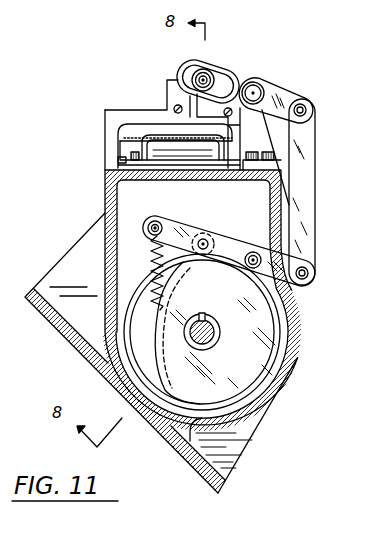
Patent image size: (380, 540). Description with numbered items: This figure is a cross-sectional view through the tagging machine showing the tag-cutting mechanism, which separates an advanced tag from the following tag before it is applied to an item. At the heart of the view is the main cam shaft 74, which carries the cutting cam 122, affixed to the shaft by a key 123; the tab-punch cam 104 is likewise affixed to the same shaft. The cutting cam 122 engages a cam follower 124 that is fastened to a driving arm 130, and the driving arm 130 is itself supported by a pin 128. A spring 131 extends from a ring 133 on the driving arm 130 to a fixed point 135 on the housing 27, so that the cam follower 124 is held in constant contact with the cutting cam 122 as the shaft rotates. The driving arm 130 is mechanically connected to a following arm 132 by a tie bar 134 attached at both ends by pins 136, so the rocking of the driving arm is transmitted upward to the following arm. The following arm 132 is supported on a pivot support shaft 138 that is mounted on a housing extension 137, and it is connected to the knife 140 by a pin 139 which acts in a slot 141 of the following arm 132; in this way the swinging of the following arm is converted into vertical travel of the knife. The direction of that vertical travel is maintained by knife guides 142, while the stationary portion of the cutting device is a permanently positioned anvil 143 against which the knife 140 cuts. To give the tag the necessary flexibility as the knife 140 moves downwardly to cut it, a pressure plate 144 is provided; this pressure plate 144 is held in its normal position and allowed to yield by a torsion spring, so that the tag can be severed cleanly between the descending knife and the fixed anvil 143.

The housing 27 is at (287, 378).
The main cam shaft 74 is at (212, 340).
The tab-punch cam 104 is at (112, 353).
The cutting cam 122 is at (262, 355).
The key 123 is at (208, 322).
The cam follower 124 is at (200, 233).
The pin 128 is at (252, 252).
The driving arm 130 is at (296, 258).
The spring 131 is at (148, 277).
The following arm 132 is at (281, 90).
The ring 133 is at (147, 226).
The tie bar 134 is at (317, 165).
The fixed point 135 is at (128, 386).
The pins 136 is at (311, 103).
The housing extension 137 is at (281, 135).
The pivot support shaft 138 is at (262, 83).
The pin 139 is at (192, 72).
The knife 140 is at (212, 58).
The slot 141 is at (184, 70).
The knife guides 142 is at (174, 100).
The anvil 143 is at (112, 128).
The pressure plate 144 is at (153, 138).